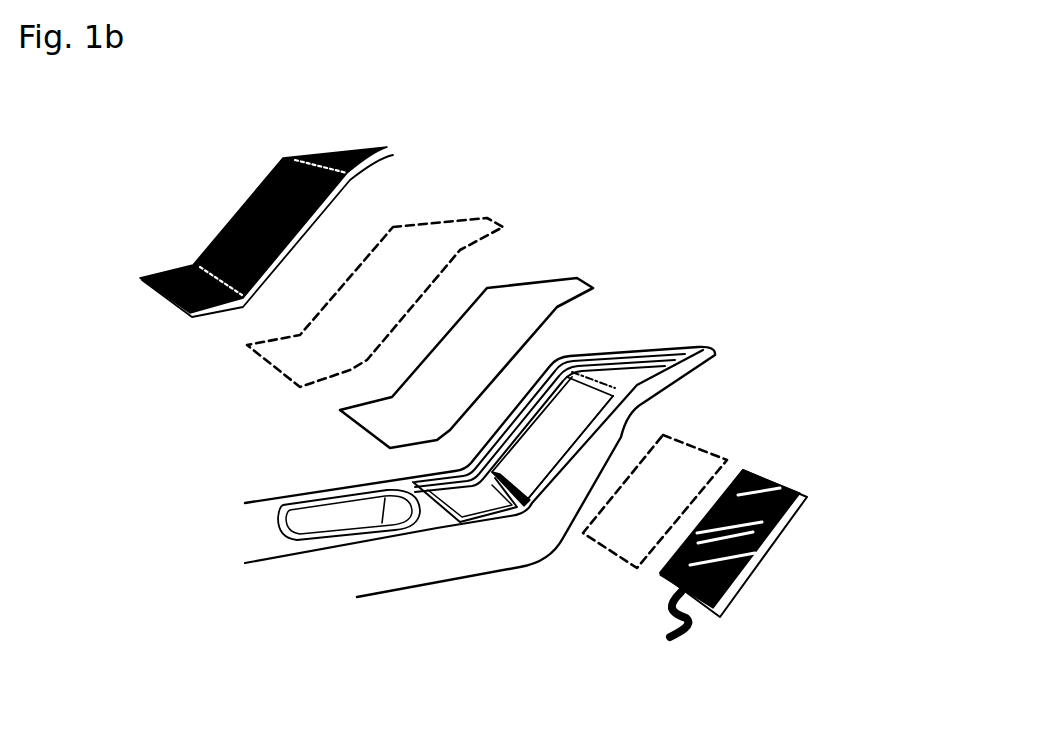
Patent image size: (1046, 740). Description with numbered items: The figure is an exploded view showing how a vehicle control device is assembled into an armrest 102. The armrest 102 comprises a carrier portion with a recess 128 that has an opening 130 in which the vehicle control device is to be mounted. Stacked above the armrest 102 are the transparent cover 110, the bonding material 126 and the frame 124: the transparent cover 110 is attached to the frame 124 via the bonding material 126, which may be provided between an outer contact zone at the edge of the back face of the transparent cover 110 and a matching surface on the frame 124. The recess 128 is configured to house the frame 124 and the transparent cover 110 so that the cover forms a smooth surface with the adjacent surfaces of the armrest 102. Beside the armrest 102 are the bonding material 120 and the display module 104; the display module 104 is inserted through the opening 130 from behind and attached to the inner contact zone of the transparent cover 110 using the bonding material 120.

The armrest 102 is at (700, 342).
The display module 104 is at (780, 477).
The transparent cover 110 is at (390, 152).
The bonding material 120 is at (697, 442).
The frame 124 is at (593, 280).
The bonding material 126 is at (498, 218).
The recess 128 is at (610, 372).
The opening 130 is at (532, 463).